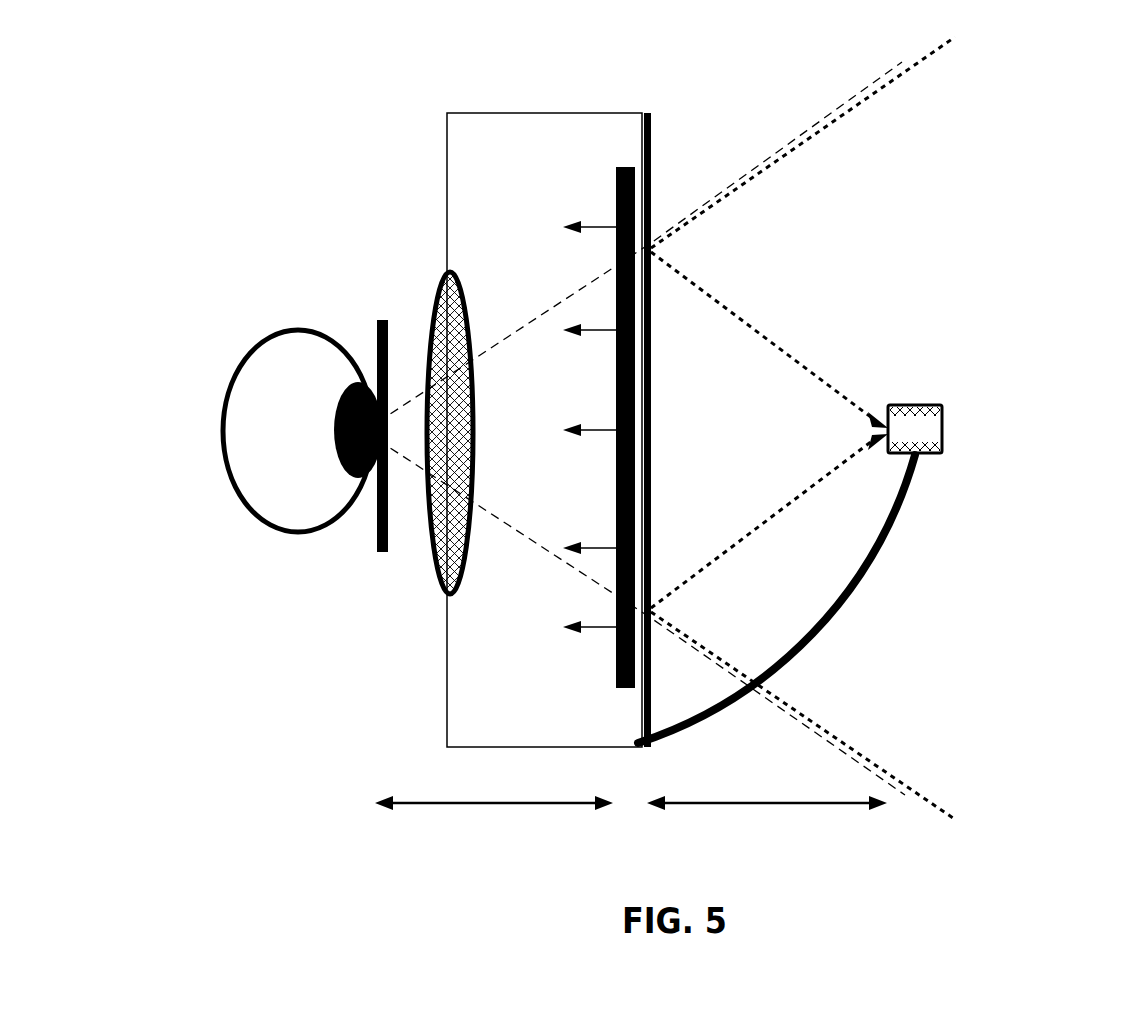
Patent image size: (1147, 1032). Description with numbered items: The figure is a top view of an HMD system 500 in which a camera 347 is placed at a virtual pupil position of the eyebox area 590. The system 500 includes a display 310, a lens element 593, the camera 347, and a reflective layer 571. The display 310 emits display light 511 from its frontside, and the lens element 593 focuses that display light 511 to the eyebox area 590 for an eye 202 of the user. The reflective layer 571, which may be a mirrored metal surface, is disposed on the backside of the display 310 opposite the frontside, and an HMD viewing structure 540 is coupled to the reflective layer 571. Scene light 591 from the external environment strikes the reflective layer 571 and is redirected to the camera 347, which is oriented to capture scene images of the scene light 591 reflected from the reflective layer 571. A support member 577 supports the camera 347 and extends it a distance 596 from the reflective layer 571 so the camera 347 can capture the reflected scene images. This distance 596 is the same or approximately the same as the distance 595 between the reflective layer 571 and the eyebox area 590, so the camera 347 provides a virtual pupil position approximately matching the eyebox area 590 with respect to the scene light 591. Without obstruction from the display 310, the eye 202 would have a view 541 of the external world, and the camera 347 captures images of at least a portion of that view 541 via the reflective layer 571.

The HMD system 500 is at (1113, 102).
The eye 202 is at (273, 318).
The eyebox area 590 is at (383, 320).
The lens element 593 is at (442, 280).
The HMD viewing structure 540 is at (521, 113).
The reflective layer 571 is at (648, 113).
The display 310 is at (616, 660).
The display light 511 is at (590, 427).
The view 541 is at (527, 323).
The scene light 591 is at (825, 424).
The camera 347 is at (930, 440).
The support member 577 is at (851, 591).
The distance 595 is at (518, 831).
The distance 596 is at (843, 828).